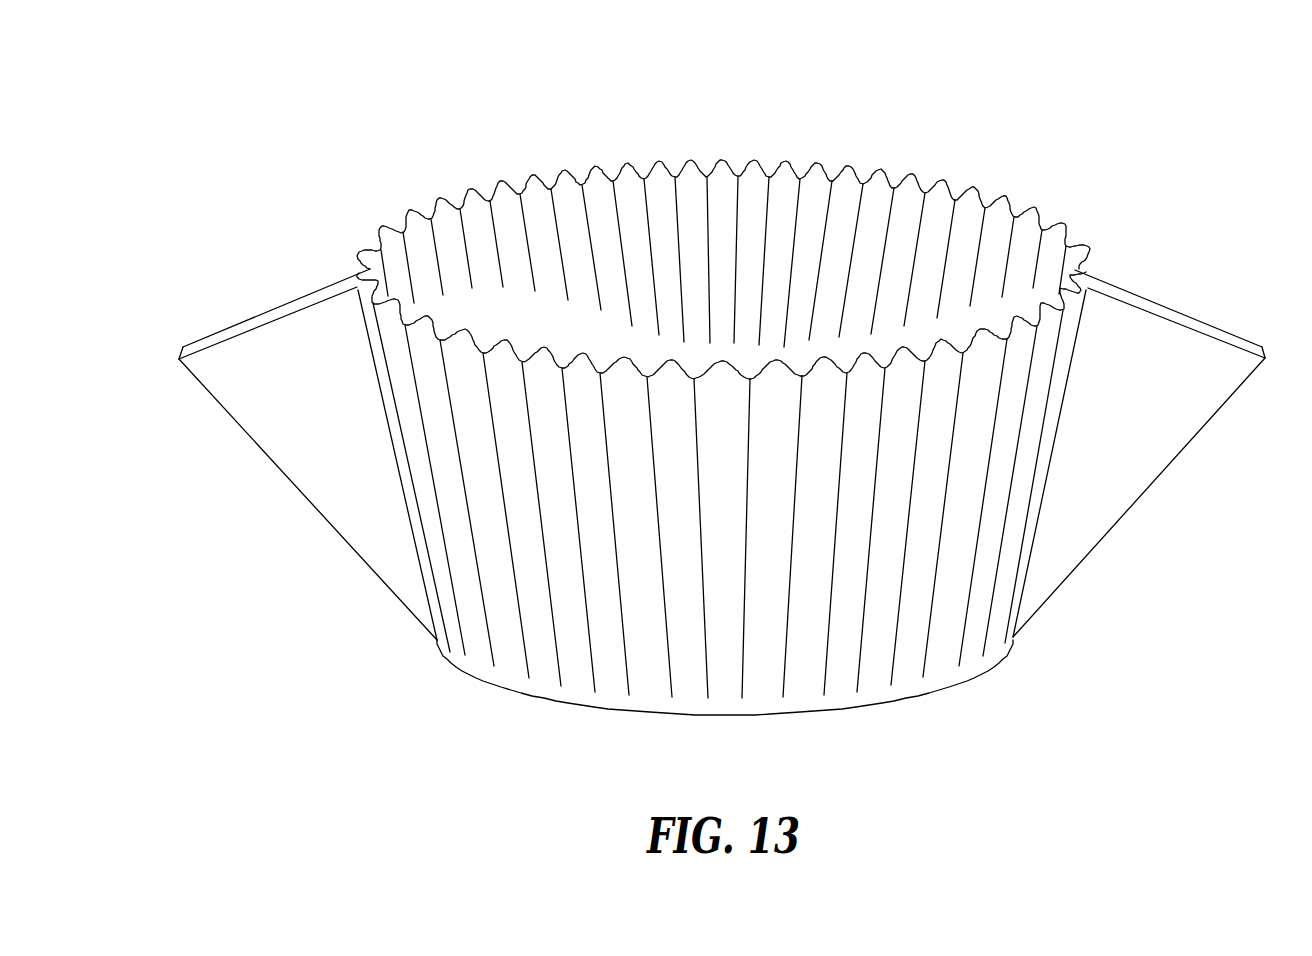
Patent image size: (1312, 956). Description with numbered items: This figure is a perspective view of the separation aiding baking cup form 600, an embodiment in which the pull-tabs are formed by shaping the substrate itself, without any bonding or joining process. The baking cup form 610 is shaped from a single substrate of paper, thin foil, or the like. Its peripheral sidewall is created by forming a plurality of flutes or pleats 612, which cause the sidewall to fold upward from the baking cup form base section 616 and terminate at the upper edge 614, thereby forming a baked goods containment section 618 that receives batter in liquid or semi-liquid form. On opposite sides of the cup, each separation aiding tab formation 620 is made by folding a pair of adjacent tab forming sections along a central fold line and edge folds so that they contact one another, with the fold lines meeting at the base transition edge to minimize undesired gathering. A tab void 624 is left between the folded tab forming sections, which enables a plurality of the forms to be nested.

The separation aiding baking cup form 600 is at (724, 405).
The baking cup form 610 is at (523, 590).
The pleats 612 is at (933, 615).
The upper edge 614 is at (608, 178).
The baking cup form base section 616 is at (672, 700).
The baked goods containment section 618 is at (891, 273).
The separation aiding tab formation 620 is at (305, 498).
The tab void 624 is at (265, 313).